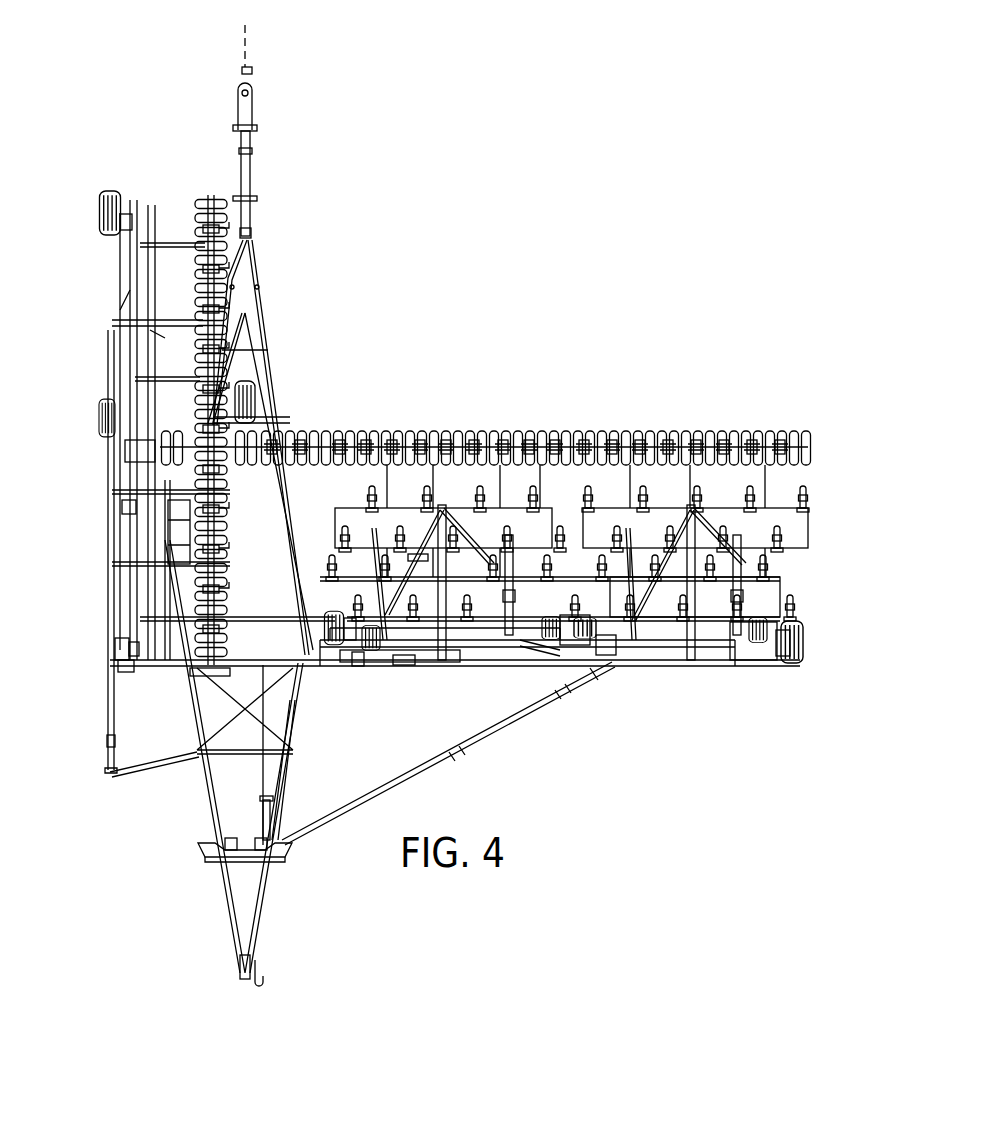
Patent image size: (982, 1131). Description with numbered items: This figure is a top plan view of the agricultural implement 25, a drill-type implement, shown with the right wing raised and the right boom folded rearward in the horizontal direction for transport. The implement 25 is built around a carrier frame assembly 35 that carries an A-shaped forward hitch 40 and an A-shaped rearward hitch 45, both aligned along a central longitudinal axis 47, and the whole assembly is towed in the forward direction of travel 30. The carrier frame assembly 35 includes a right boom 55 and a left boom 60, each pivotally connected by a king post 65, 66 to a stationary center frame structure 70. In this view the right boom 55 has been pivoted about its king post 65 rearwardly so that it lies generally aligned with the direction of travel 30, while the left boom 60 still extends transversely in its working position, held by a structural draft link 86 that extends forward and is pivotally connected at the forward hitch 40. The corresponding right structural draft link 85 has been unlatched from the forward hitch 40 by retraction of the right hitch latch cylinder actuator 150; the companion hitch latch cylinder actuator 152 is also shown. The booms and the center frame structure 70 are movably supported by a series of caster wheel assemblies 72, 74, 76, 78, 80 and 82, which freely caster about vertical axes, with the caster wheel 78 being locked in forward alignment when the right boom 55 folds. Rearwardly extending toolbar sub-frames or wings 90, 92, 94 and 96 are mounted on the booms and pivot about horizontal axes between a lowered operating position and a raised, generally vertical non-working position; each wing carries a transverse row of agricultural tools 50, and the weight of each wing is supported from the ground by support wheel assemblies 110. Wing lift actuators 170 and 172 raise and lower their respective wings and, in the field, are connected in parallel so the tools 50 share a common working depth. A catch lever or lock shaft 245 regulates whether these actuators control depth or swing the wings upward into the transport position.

The agricultural implement 25 is at (442, 365).
The forward direction of travel 30 is at (168, 888).
The carrier frame assembly 35 is at (341, 676).
The forward hitch 40 is at (279, 906).
The rearward hitch 45 is at (258, 83).
The central longitudinal axis 47 is at (249, 47).
The agricultural tools 50 is at (800, 497).
The right boom 55 is at (104, 503).
The left boom 60 is at (668, 658).
The king post 65 is at (119, 669).
The king post 66 is at (360, 669).
The center frame structure 70 is at (300, 491).
The caster wheel assembly 72 is at (126, 193).
The caster wheel assembly 74 is at (98, 410).
The center caster-wheel assembly 76 is at (114, 653).
The caster wheel 78 is at (336, 612).
The caster wheel assembly 80 is at (601, 630).
The caster wheel assembly 82 is at (797, 670).
The structural draft link 85 is at (106, 712).
The structural draft link 86 is at (452, 750).
The wing 90 is at (188, 350).
The wing 92 is at (176, 543).
The wing 94 is at (418, 480).
The wing 96 is at (660, 492).
The support wheel assemblies 110 is at (816, 447).
The hitch latch cylinder actuator 150 is at (236, 830).
The hitch latch cylinder actuator 152 is at (251, 832).
The wing lift actuator 170 is at (511, 600).
The wing lift actuator 172 is at (745, 590).
The lock shaft 245 is at (412, 666).